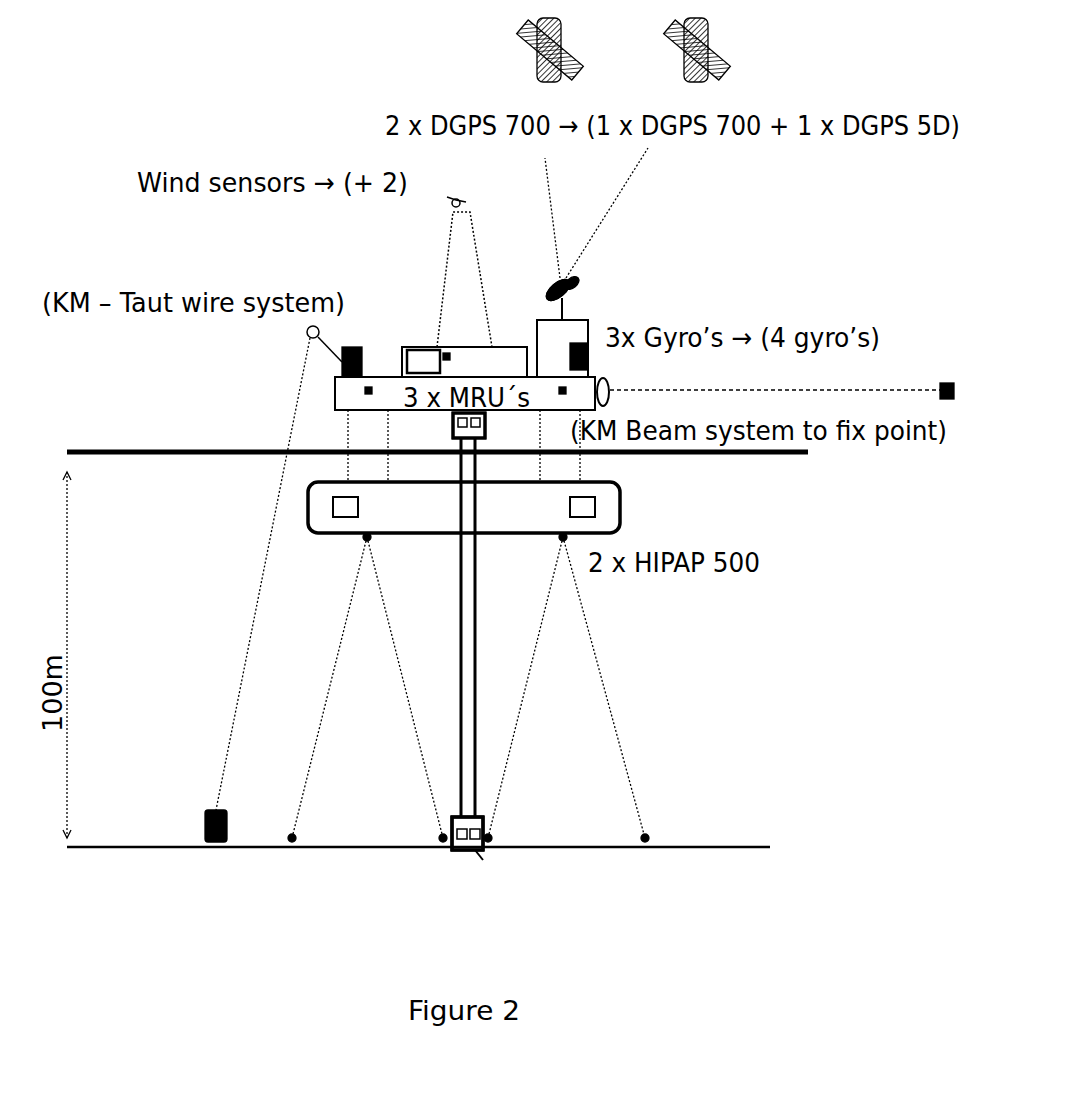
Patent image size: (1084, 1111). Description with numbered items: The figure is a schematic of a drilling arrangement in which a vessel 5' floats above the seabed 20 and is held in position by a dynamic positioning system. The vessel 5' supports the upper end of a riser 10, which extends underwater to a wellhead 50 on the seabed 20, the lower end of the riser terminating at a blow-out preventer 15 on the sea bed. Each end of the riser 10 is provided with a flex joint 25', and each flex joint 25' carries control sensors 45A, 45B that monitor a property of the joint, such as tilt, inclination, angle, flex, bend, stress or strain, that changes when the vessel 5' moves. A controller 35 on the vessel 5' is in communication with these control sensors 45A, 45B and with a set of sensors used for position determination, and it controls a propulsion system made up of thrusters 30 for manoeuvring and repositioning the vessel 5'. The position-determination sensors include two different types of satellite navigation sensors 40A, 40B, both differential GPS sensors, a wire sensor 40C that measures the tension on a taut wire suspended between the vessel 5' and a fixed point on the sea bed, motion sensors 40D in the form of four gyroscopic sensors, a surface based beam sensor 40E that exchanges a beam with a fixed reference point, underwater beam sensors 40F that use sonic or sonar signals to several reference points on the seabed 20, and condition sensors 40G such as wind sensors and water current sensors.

The vessel 5' is at (464, 372).
The riser 10 is at (465, 600).
The blow-out preventer 15 is at (458, 852).
The seabed 20 is at (137, 845).
The flex joint 25' is at (566, 631).
The thruster 30 is at (347, 505).
The controller 35 is at (415, 350).
The satellite navigation sensor 40A is at (572, 300).
The satellite navigation sensor 40B is at (558, 290).
The wire sensor 40C is at (350, 345).
The motion sensors 40D is at (573, 345).
The surface based beam sensor 40E is at (608, 385).
The underwater beam sensors 40F is at (365, 537).
The condition sensors 40G is at (448, 198).
The control sensor 45A is at (455, 438).
The control sensor 45B is at (455, 830).
The wellhead 50 is at (475, 852).